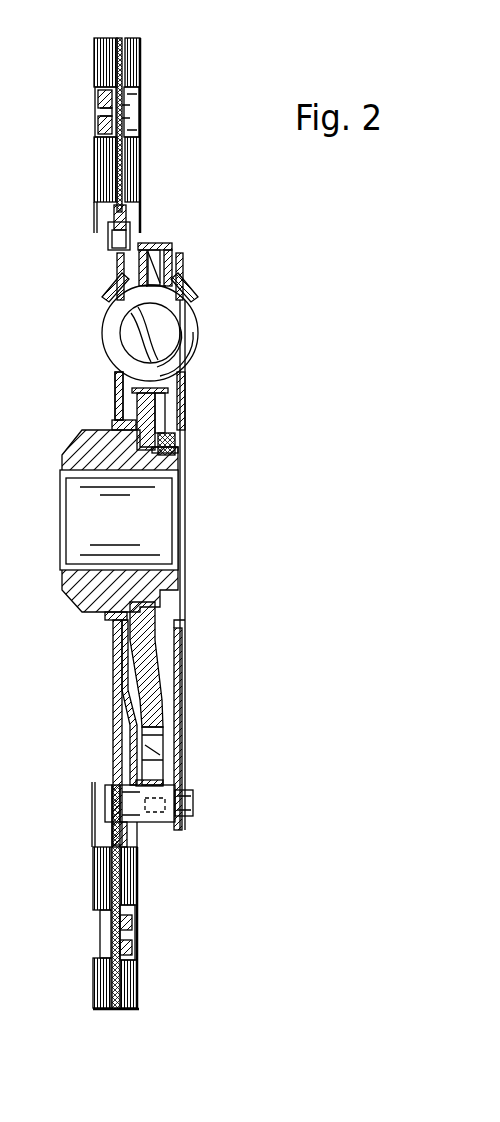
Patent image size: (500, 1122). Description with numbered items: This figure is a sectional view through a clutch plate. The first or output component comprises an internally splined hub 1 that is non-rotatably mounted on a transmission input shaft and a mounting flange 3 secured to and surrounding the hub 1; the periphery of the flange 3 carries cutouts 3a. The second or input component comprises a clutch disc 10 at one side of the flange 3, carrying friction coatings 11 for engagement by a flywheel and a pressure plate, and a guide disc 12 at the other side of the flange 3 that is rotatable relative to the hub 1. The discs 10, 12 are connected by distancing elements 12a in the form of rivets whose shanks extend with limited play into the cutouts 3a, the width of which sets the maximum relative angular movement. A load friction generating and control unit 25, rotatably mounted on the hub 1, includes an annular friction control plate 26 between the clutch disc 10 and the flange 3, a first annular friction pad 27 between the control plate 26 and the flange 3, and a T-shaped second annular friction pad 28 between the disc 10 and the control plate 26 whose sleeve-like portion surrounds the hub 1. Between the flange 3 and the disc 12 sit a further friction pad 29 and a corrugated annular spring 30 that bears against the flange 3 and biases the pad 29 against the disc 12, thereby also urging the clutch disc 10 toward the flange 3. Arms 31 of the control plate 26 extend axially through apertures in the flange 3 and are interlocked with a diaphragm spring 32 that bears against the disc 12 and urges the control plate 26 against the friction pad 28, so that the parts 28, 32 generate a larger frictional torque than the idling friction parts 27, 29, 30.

The hub 1 is at (66, 459).
The mounting flange 3 is at (143, 699).
The cutouts 3a is at (137, 782).
The clutch disc 10 is at (117, 720).
The friction coatings 11 is at (113, 50).
The disc 12 is at (183, 733).
The distancing elements 12a is at (168, 805).
The load friction generating and control unit 25 is at (192, 379).
The friction control plate 26 is at (135, 262).
The first annular friction pad 27 is at (115, 412).
The second annular friction pad 28 is at (112, 624).
The friction pad 29 is at (178, 444).
The corrugated annular spring 30 is at (168, 452).
The arms 31 is at (181, 352).
The diaphragm spring 32 is at (180, 406).